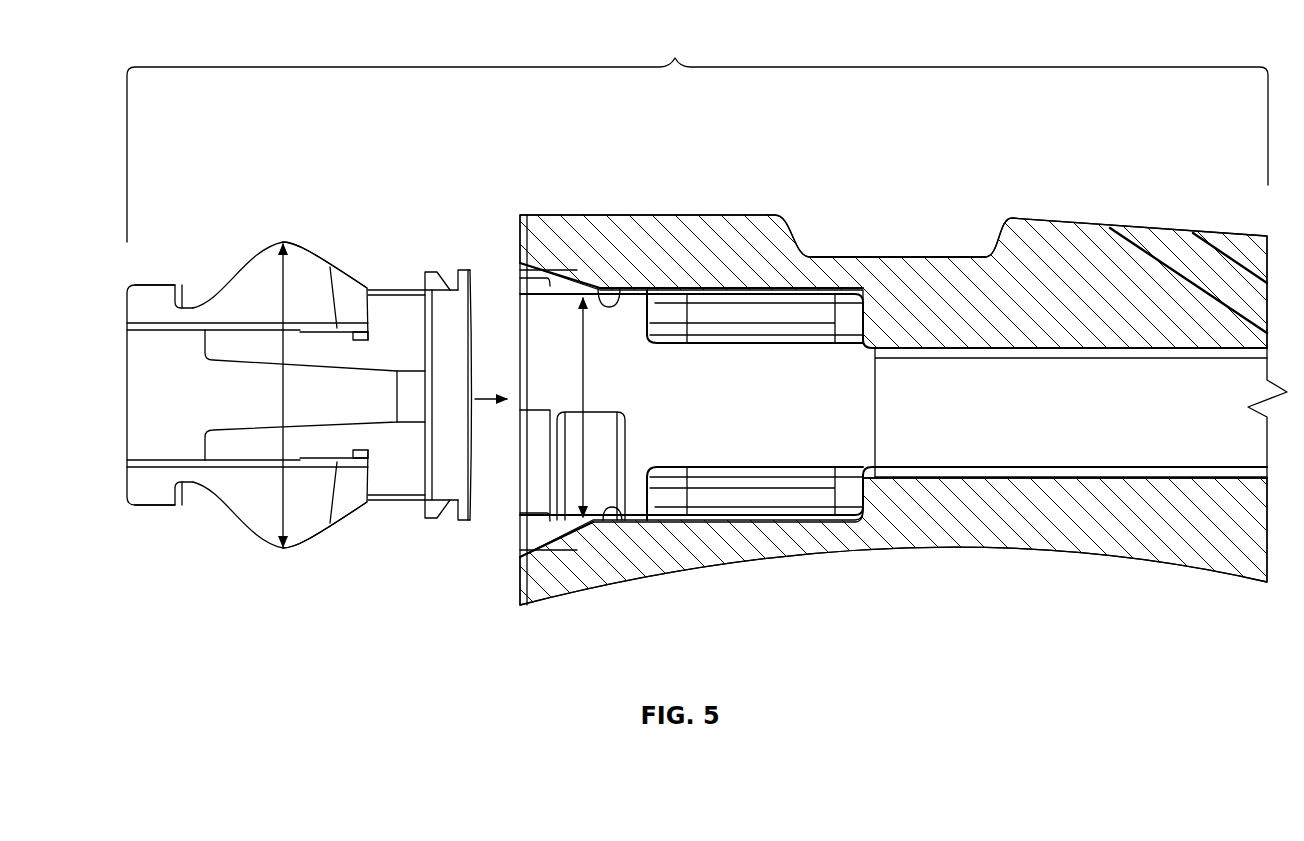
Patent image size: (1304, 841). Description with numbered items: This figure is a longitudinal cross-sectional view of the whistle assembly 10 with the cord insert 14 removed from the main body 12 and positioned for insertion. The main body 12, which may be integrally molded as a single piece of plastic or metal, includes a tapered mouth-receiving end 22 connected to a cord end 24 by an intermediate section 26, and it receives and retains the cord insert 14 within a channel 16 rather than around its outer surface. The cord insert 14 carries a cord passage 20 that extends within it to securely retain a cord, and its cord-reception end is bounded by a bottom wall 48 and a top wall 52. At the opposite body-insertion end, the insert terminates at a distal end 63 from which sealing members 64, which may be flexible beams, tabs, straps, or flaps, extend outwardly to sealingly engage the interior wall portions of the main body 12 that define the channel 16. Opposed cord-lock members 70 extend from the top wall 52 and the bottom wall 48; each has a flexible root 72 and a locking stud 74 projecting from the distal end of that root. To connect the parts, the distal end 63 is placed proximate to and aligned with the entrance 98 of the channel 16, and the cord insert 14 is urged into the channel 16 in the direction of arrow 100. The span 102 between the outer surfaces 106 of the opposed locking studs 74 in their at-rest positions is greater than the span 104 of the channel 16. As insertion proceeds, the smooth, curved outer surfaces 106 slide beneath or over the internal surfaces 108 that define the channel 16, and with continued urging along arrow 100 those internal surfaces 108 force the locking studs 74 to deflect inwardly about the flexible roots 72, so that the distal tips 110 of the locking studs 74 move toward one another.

The whistle assembly 10 is at (697, 134).
The main body 12 is at (1060, 200).
The cord insert 14 is at (267, 216).
The channel 16 is at (788, 367).
The cord passage 20 is at (142, 427).
The mouth-receiving end 22 is at (1202, 230).
The cord end 24 is at (537, 213).
The intermediate section 26 is at (903, 255).
The bottom wall 48 is at (148, 508).
The top wall 52 is at (148, 283).
The distal end 63 is at (472, 325).
The sealing members 64 is at (430, 270).
The cord-lock members 70 is at (328, 257).
The flexible root 72 is at (190, 307).
The locking stud 74 is at (288, 242).
The entrance 98 is at (538, 321).
The arrow 100 is at (477, 402).
The span 102 is at (280, 387).
The span 104 is at (583, 397).
The outer surfaces 106 is at (313, 250).
The internal surfaces 108 is at (607, 303).
The distal tips 110 is at (353, 338).